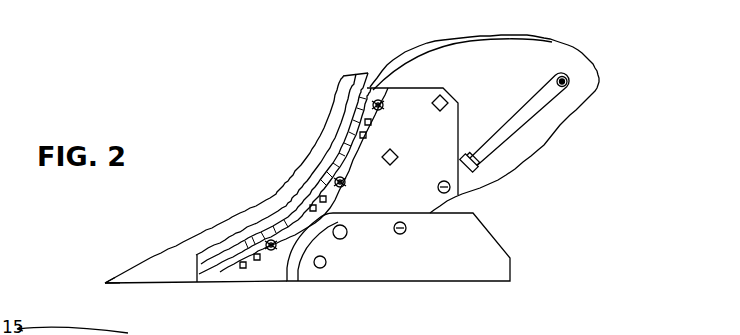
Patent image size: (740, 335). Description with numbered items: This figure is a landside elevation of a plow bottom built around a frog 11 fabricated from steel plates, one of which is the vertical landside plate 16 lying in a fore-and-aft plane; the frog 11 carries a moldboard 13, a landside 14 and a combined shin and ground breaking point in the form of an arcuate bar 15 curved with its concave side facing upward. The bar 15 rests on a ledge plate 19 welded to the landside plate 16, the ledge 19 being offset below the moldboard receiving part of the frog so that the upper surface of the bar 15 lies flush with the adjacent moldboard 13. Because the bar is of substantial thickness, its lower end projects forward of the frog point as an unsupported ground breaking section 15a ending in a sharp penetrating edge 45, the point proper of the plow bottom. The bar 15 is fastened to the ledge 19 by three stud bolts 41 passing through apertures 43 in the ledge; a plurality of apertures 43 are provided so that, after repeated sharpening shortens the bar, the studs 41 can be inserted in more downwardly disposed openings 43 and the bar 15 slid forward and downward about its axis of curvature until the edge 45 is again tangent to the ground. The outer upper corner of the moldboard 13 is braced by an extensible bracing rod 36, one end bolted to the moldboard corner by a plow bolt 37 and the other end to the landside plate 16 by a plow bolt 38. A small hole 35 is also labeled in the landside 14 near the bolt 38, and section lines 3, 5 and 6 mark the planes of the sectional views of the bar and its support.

The frog 11 is at (442, 125).
The moldboard 13 is at (549, 48).
The landside 14 is at (430, 273).
The combined shin and ground breaking point 15 is at (324, 121).
The unsupported ground breaking point section 15a is at (163, 268).
The landside plate 16 is at (421, 96).
The ledge plate 19 is at (352, 163).
The bolt hole 35 is at (407, 229).
The extensible bracing rod 36 is at (510, 128).
The plow bolt 37 is at (570, 84).
The plow bolt 38 is at (457, 193).
The stud bolts 41 is at (384, 106).
The apertures 43 is at (366, 135).
The sharp penetrating edge 45 is at (105, 282).
The section line 3 is at (292, 150).
The section line 5 is at (292, 92).
The section line 6 is at (265, 193).